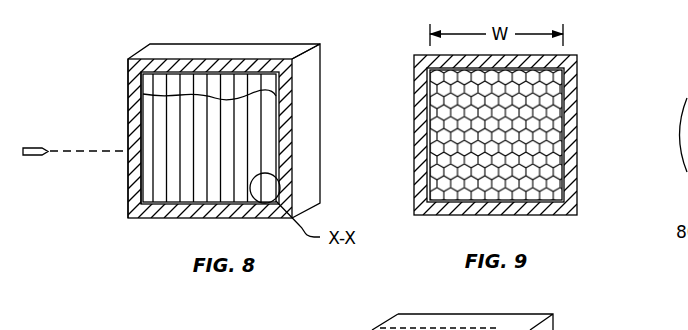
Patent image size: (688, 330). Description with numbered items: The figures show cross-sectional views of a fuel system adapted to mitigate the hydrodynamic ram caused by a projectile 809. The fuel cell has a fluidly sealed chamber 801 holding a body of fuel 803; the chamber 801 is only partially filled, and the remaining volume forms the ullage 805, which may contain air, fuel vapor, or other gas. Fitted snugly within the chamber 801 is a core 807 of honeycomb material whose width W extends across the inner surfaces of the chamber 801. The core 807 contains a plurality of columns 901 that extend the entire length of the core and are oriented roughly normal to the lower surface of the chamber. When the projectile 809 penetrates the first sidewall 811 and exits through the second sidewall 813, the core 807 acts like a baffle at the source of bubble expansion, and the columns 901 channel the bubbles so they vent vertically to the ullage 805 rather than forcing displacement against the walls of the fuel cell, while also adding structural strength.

In FIG. 8, the chamber 801 is at (283, 158).
In FIG. 8, the fuel 803 is at (248, 133).
In FIG. 8, the ullage 805 is at (242, 82).
In FIG. 8, the core 807 is at (153, 204).
In FIG. 9, the core 807 is at (566, 170).
In FIG. 8, the projectile 809 is at (29, 156).
In FIG. 8, the first sidewall 811 is at (128, 103).
In FIG. 8, the second sidewall 813 is at (312, 183).
In FIG. 9, the columns 901 is at (558, 83).